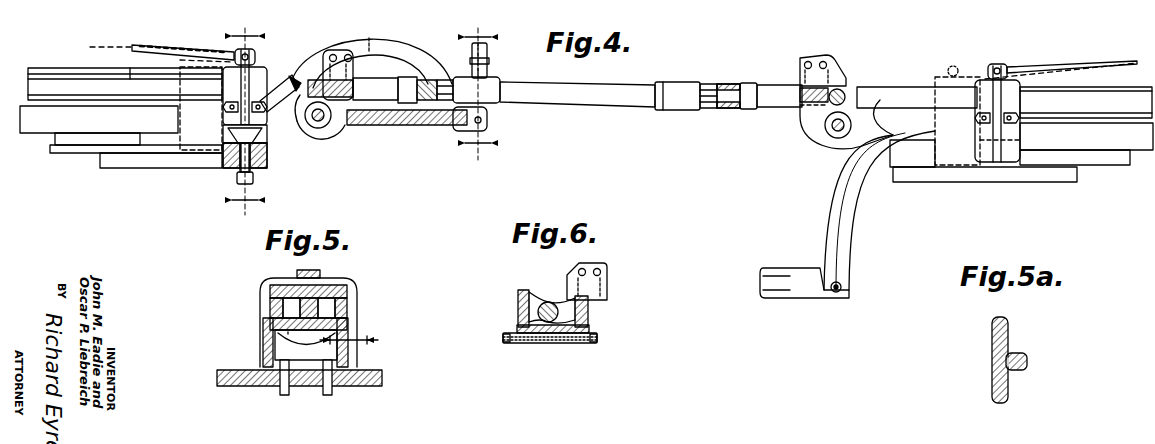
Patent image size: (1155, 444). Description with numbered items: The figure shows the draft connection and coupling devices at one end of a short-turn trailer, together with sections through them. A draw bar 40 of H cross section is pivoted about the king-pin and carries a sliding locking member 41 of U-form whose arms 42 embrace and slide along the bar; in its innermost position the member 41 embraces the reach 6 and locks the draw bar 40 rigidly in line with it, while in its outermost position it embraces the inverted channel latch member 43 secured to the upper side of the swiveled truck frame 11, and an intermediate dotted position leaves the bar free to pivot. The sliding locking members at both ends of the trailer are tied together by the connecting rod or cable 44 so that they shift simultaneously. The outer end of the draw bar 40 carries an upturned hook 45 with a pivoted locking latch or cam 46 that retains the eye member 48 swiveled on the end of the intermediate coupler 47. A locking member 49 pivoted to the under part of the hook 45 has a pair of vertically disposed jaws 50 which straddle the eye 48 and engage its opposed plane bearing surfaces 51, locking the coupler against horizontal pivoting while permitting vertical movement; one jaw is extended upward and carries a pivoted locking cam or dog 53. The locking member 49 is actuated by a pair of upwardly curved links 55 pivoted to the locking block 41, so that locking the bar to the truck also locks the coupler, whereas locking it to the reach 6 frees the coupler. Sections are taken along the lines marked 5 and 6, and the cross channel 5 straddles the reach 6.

In FIG. 4, the cross channel 5 is at (245, 117).
In FIG. 4, the reach 6 is at (97, 125).
In FIG. 5, the reach 6 is at (288, 334).
In FIG. 4, the swiveled truck frame 11 is at (1023, 178).
In FIG. 5, the swiveled truck frame 11 is at (380, 378).
In FIG. 4, the draw bar 40 is at (906, 86).
In FIG. 5, the draw bar 40 is at (333, 287).
In FIG. 4, the sliding locking member 41 is at (986, 80).
In FIG. 5, the sliding locking member 41 is at (357, 318).
In FIG. 5, the arms of locking member 42 is at (268, 336).
In FIG. 5A, the arms of locking member 42 is at (992, 347).
In FIG. 4, the latch member 43 is at (268, 150).
In FIG. 5, the latch member 43 is at (333, 384).
In FIG. 4, the connecting rod or cable 44 is at (170, 50).
In FIG. 4, the upturned hook 45 is at (308, 133).
In FIG. 4, the pivoted locking latch or cam 46 is at (842, 74).
In FIG. 4, the intermediate coupler 47 is at (643, 84).
In FIG. 4, the eye member 48 is at (383, 97).
In FIG. 4, the locking member 49 is at (440, 126).
In FIG. 6, the locking jaws 50 is at (518, 311).
In FIG. 4, the plane bearing surfaces 51 is at (678, 107).
In FIG. 6, the plane bearing surfaces 51 is at (572, 298).
In FIG. 6, the pivoted locking cam or dog 53 is at (567, 300).
In FIG. 4, the pivoted links 55 is at (408, 52).
In FIG. 6, the pivoted links 55 is at (510, 344).